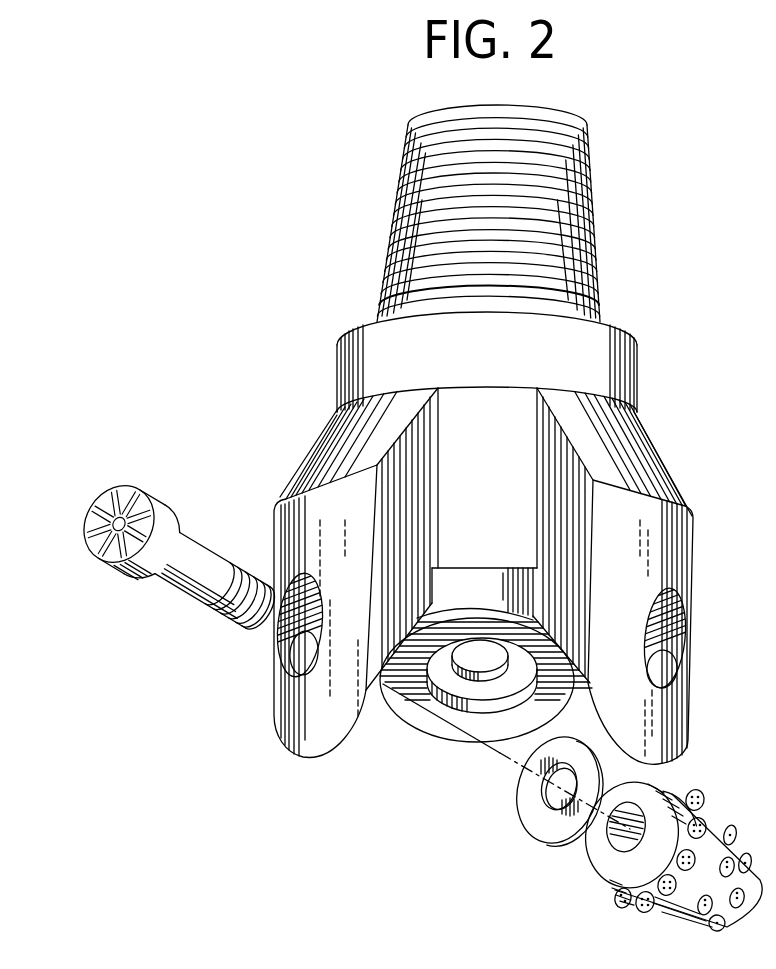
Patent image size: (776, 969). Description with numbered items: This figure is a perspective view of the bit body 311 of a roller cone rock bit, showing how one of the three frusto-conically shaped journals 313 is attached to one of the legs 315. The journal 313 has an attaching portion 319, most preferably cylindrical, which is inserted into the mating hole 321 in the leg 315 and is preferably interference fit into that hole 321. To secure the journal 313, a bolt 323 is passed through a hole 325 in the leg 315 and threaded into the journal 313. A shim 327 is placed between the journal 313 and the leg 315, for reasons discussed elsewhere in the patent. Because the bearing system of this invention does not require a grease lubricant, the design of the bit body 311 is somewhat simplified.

The bit body 311 is at (337, 362).
The frusto-conically shaped journal 313 is at (659, 853).
The leg 315 is at (286, 611).
The attaching portion 319 is at (612, 891).
The mating hole 321 is at (453, 704).
The bolt 323 is at (182, 597).
The hole 325 is at (291, 655).
The shim 327 is at (521, 808).